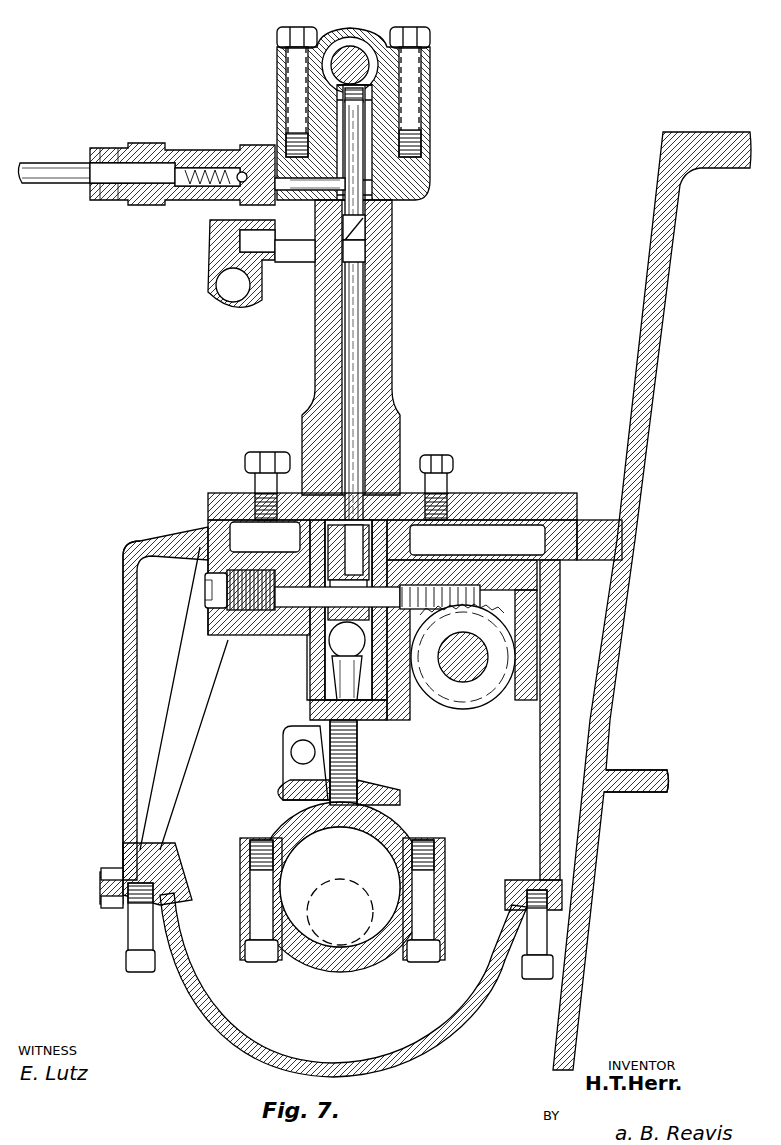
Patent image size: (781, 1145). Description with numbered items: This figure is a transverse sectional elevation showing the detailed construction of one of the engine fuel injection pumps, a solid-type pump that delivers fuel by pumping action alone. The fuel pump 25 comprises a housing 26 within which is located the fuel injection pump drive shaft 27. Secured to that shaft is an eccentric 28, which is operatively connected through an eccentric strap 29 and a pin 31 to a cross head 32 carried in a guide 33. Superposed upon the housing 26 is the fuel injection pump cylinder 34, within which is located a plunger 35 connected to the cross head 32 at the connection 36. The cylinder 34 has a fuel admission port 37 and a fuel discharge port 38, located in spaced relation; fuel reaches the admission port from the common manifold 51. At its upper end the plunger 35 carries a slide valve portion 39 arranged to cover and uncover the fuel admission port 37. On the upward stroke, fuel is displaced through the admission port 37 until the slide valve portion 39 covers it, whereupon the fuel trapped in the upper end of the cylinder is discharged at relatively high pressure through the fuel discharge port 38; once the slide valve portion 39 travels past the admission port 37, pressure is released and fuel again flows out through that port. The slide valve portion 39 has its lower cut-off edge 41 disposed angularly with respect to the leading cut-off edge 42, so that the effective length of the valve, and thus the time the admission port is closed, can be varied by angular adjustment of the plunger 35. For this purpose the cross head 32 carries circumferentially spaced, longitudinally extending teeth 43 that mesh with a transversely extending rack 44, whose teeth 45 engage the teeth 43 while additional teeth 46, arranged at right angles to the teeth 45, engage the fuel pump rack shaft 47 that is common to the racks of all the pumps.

The fuel pump 25 is at (70, 688).
The housing 26 is at (122, 559).
The fuel injection pump drive shaft 27 is at (312, 930).
The eccentric 28 is at (372, 848).
The eccentric strap 29 is at (372, 795).
The pin 31 is at (291, 752).
The cross head 32 is at (296, 650).
The guide 33 is at (330, 673).
The fuel injection pump cylinder 34 is at (393, 340).
The plunger 35 is at (352, 373).
The connection of plunger to cross head 36 is at (462, 492).
The fuel admission port 37 is at (302, 275).
The fuel discharge port 38 is at (262, 150).
The slide valve portion 39 is at (372, 232).
The lower cut-off edge 41 is at (366, 250).
The leading cut-off edge 42 is at (352, 198).
The teeth of cross head 43 is at (388, 705).
The rack 44 is at (215, 590).
The rack teeth 45 is at (236, 636).
The additional rack teeth 46 is at (505, 680).
The fuel pump rack shaft 47 is at (470, 700).
The common manifold 51 is at (210, 255).